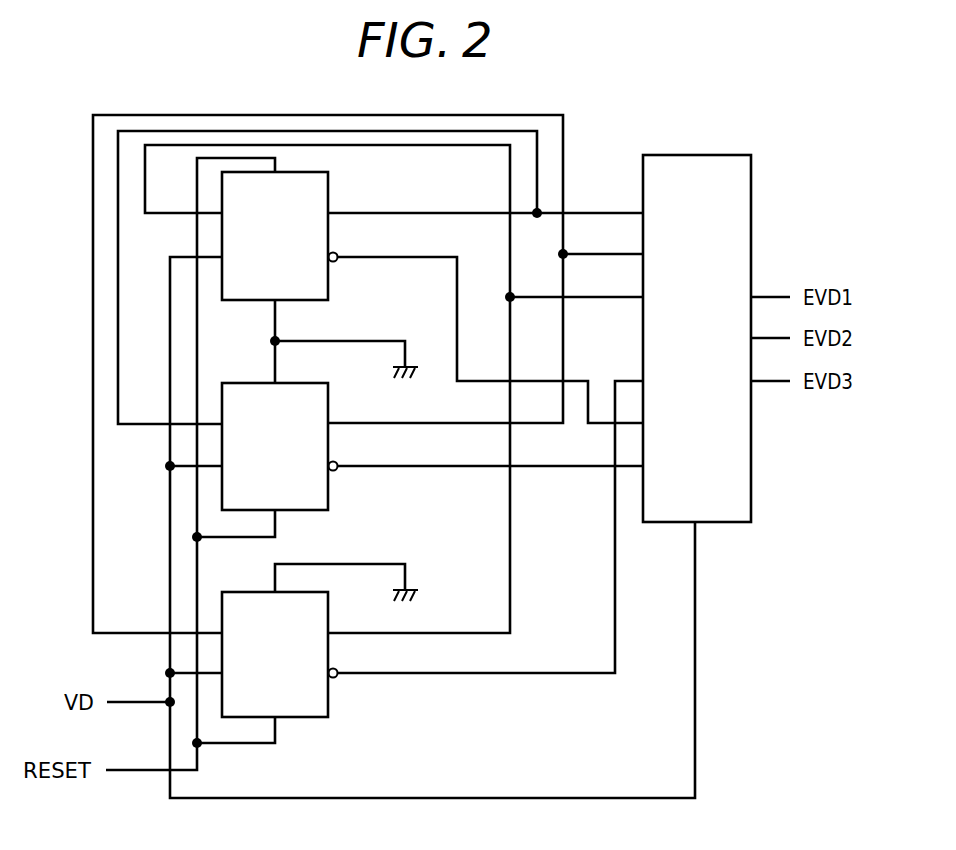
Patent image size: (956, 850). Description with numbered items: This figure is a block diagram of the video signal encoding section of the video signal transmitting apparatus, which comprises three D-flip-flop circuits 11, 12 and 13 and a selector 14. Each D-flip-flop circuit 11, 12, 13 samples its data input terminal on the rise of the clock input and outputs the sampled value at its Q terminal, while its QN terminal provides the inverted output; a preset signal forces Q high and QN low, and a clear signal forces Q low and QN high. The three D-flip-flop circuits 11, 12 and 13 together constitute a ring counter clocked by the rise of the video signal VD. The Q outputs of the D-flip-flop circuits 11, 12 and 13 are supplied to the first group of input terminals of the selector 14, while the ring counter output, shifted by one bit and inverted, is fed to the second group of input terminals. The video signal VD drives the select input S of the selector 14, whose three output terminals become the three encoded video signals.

The D-flip-flop circuit 11 is at (328, 189).
The D-flip-flop circuit 12 is at (328, 500).
The D-flip-flop circuit 13 is at (328, 706).
The selector 14 is at (751, 172).